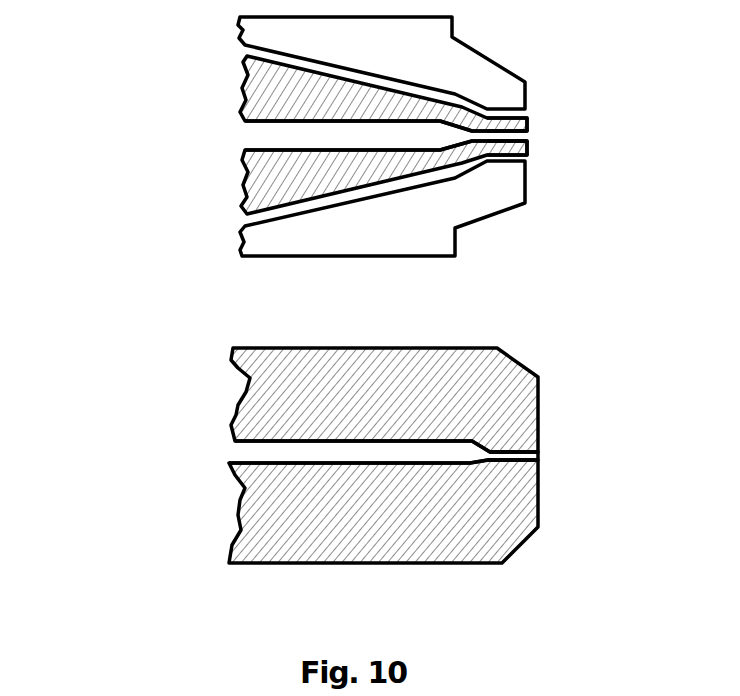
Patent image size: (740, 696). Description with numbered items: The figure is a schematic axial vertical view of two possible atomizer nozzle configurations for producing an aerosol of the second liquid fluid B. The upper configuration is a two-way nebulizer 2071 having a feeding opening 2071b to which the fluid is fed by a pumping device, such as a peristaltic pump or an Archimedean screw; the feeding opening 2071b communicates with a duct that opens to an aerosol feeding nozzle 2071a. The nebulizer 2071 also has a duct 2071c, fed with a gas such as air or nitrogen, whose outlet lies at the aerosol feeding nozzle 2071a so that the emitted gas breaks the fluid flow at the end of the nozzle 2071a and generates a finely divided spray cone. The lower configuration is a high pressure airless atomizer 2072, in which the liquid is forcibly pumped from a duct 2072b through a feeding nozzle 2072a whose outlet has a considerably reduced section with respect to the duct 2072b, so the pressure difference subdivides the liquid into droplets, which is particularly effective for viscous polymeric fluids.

The two-way nebulizer 2071 is at (360, 136).
The aerosol feeding nozzle 2071a is at (537, 135).
The feeding opening 2071b is at (249, 134).
The duct 2071c is at (239, 221).
The high pressure (airless) atomizer 2072 is at (359, 478).
The feeding nozzle 2072a is at (549, 456).
The duct 2072b is at (237, 447).